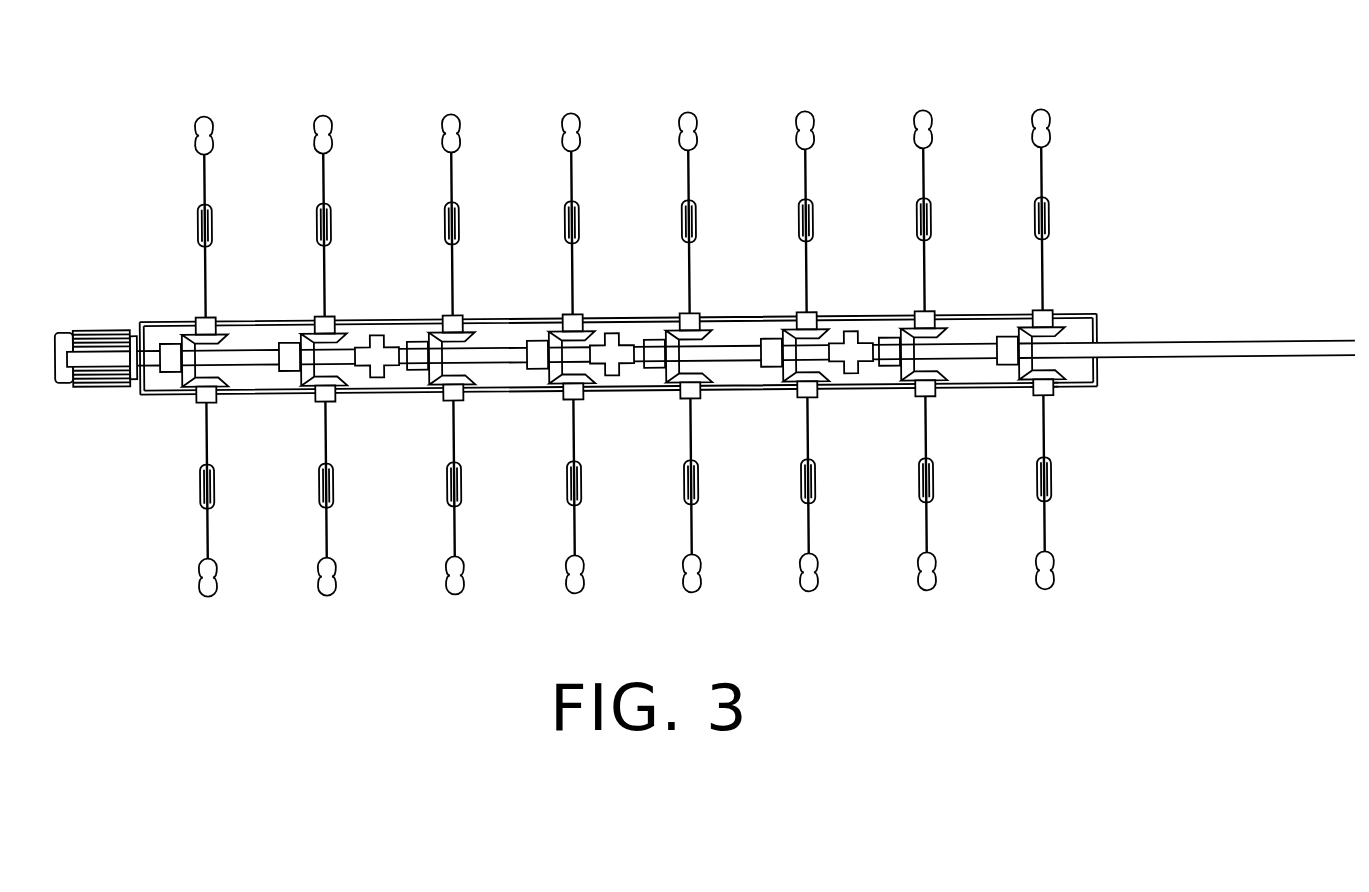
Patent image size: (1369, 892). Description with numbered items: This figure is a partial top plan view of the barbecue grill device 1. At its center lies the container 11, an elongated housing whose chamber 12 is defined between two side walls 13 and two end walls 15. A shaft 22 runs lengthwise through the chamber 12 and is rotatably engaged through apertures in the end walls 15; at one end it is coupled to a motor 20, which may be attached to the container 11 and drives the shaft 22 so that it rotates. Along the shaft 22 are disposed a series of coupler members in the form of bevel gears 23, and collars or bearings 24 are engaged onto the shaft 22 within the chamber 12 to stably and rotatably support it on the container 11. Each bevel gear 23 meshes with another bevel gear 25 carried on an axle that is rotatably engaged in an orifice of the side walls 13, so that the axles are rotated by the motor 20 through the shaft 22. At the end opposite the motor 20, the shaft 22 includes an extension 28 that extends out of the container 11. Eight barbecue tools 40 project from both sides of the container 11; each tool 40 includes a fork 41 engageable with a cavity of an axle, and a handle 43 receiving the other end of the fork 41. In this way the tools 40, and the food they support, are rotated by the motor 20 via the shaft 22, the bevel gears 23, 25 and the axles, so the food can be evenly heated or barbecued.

The barbecue grill device 1 is at (705, 334).
The container 11 is at (689, 362).
The chamber 12 is at (674, 439).
The side wall 13 is at (1072, 447).
The end wall 15 is at (1165, 365).
The motor 20 is at (96, 272).
The shaft 22 is at (601, 296).
The bevel gear 23 is at (589, 280).
The bearing 24 is at (614, 306).
The bevel gear 25 is at (624, 296).
The extension 28 is at (1210, 301).
The barbecue tool 40 is at (665, 404).
The fork 41 is at (669, 389).
The handle 43 is at (624, 386).